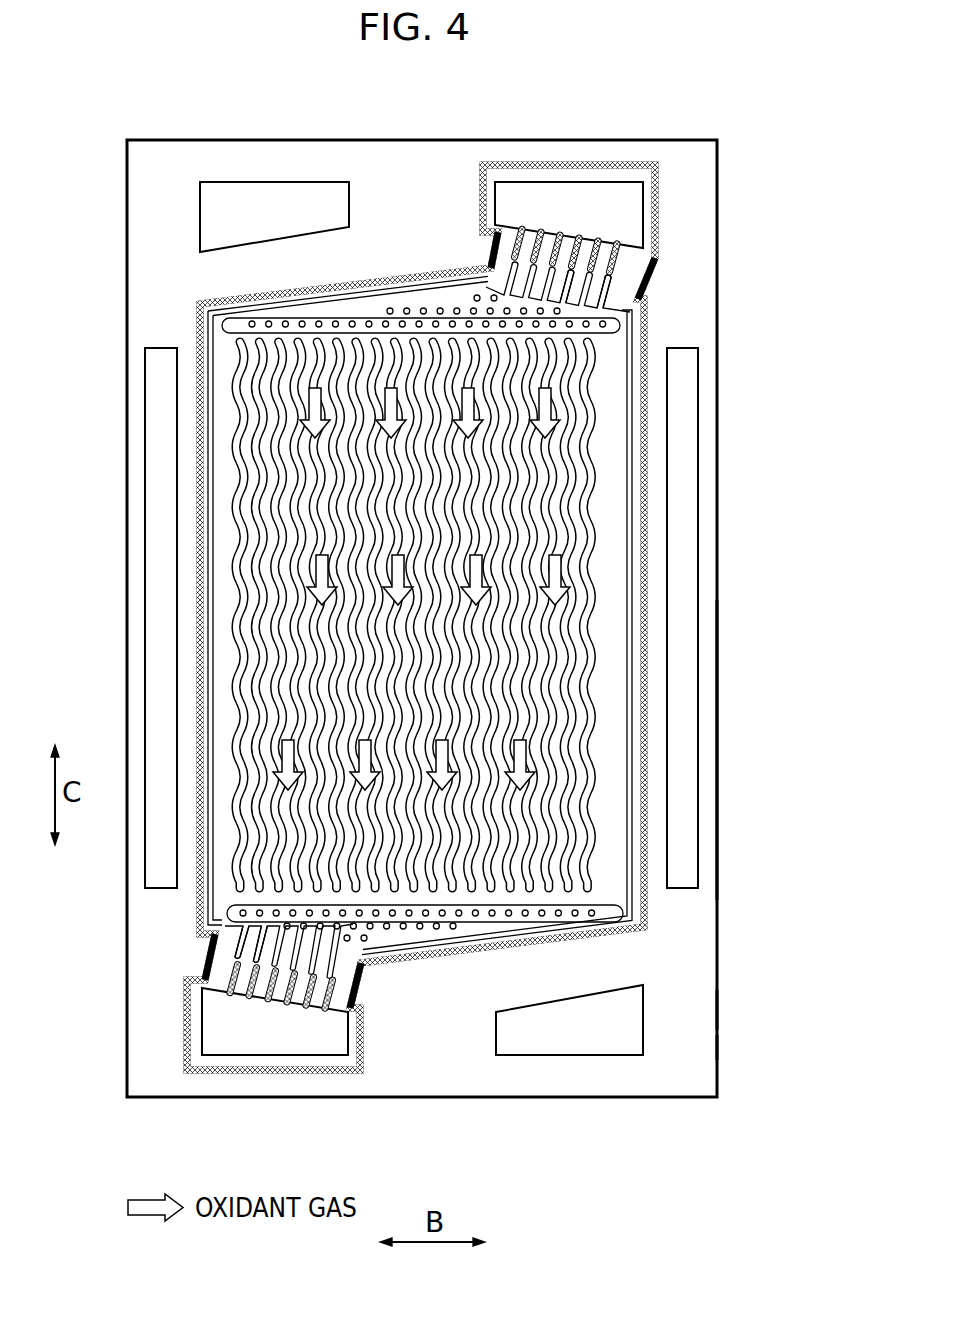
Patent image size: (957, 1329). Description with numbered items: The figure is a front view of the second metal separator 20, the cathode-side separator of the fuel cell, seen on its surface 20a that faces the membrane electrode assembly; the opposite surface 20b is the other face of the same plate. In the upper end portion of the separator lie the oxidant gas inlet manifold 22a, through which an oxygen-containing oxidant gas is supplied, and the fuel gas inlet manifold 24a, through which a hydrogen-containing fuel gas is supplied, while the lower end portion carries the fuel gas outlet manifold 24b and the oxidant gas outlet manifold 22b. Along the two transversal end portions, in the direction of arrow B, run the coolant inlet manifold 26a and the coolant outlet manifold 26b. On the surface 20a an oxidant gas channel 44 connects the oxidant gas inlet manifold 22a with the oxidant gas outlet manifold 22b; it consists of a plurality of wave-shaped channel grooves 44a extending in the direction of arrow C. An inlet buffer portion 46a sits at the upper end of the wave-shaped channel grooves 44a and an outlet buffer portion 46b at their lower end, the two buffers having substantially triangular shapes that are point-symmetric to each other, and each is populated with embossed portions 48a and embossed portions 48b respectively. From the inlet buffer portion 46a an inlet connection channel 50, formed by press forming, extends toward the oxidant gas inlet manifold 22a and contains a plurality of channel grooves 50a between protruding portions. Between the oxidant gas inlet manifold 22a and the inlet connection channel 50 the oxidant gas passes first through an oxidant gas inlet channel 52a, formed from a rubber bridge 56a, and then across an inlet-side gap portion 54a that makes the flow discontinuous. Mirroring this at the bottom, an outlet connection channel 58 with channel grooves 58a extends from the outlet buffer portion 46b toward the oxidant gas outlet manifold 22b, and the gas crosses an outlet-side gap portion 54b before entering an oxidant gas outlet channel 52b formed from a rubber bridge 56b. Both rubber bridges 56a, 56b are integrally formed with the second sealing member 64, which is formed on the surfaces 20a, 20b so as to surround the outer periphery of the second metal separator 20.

The second metal separator 20 is at (506, 77).
The surface of the second metal separator 20a is at (682, 1012).
The surface of the second metal separator 20b is at (682, 1046).
The oxidant gas inlet manifold 22a is at (622, 184).
The oxidant gas outlet manifold 22b is at (205, 1042).
The fuel gas inlet manifold 24a is at (287, 182).
The fuel gas outlet manifold 24b is at (615, 1050).
The coolant inlet manifold 26a is at (688, 568).
The coolant outlet manifold 26b is at (160, 566).
The oxidant gas channel 44 is at (578, 552).
The wave-shaped channel grooves 44a is at (565, 858).
The inlet buffer portion 46a is at (462, 300).
The outlet buffer portion 46b is at (385, 940).
The embossed portions 48a is at (423, 308).
The embossed portions 48b is at (453, 932).
The inlet connection channel 50 is at (614, 294).
The channel grooves 50a is at (577, 287).
The oxidant gas inlet channel 52a is at (567, 242).
The oxidant gas outlet channel 52b is at (277, 990).
The inlet-side gap portion 54a is at (514, 257).
The outlet-side gap portion 54b is at (330, 978).
The rubber bridge 56a is at (538, 246).
The rubber bridge 56b is at (316, 988).
The outlet connection channel 58 is at (235, 945).
The channel grooves 58a is at (262, 948).
The second sealing member 64 is at (720, 713).